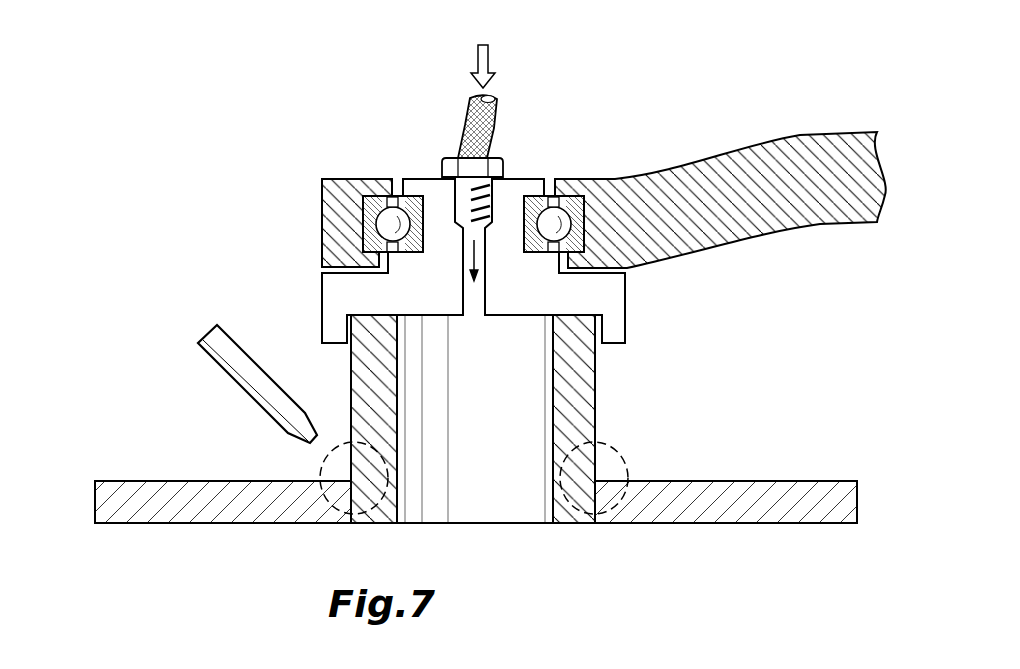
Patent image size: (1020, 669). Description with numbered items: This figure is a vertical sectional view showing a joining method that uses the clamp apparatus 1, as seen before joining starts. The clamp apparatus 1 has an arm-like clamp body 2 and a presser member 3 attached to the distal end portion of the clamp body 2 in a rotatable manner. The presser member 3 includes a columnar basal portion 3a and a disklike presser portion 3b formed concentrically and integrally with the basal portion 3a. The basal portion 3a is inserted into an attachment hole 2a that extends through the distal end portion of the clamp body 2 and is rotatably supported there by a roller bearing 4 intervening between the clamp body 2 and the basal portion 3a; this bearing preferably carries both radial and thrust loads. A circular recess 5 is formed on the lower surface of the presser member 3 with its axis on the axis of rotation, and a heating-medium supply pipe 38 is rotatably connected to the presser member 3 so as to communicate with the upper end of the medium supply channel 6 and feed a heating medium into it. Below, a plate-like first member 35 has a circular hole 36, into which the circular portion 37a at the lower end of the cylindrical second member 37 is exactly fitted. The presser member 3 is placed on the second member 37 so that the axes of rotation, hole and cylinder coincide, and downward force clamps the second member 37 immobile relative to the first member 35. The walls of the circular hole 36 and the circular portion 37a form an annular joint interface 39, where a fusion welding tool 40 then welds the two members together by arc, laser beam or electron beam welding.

The clamp apparatus 1 is at (604, 160).
The clamp body 2 is at (828, 142).
The attachment hole 2a is at (400, 194).
The presser member 3 is at (475, 244).
The basal portion 3a is at (512, 177).
The presser portion 3b is at (330, 292).
The roller bearing 4 is at (372, 203).
The recess 5 is at (517, 448).
The medium supply channel 6 is at (480, 305).
The first member 35 is at (807, 477).
The circular hole 36 is at (585, 512).
The second member 37 is at (596, 418).
The circular portion 37a is at (555, 512).
The heating-medium supply pipe 38 is at (464, 110).
The annular joint interface 39 is at (353, 502).
The fusion welding tool 40 is at (188, 370).